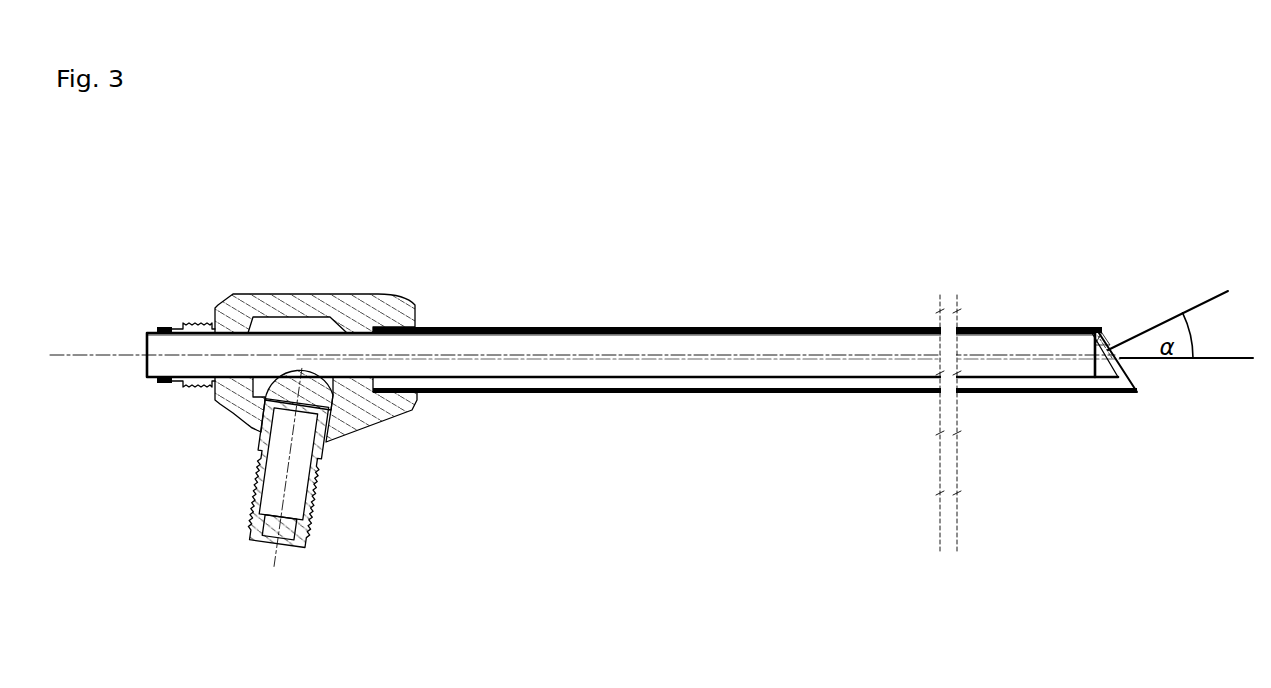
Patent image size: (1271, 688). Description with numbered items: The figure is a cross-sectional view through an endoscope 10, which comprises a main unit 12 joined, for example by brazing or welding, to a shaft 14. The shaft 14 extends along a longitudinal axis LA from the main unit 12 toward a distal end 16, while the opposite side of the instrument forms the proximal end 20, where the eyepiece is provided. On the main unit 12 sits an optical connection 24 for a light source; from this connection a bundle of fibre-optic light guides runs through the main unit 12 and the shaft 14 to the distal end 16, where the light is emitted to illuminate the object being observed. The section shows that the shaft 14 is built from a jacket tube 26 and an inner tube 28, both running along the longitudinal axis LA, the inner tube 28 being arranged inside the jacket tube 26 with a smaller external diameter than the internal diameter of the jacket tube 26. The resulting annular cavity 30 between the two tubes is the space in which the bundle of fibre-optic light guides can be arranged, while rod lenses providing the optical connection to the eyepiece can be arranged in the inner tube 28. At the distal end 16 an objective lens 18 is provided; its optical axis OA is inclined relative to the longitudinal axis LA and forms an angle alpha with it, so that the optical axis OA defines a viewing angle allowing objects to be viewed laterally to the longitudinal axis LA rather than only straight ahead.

The endoscope 10 is at (657, 353).
The main unit 12 is at (330, 295).
The shaft 14 is at (755, 343).
The distal end 16 is at (1108, 333).
The objective lens 18 is at (1117, 340).
The proximal end 20 is at (145, 360).
The optical connection 24 is at (288, 508).
The jacket tube 26 is at (478, 327).
The inner tube 28 is at (547, 343).
The cavity 30 is at (625, 387).
The longitudinal axis LA is at (538, 357).
The optical axis OA is at (1192, 320).